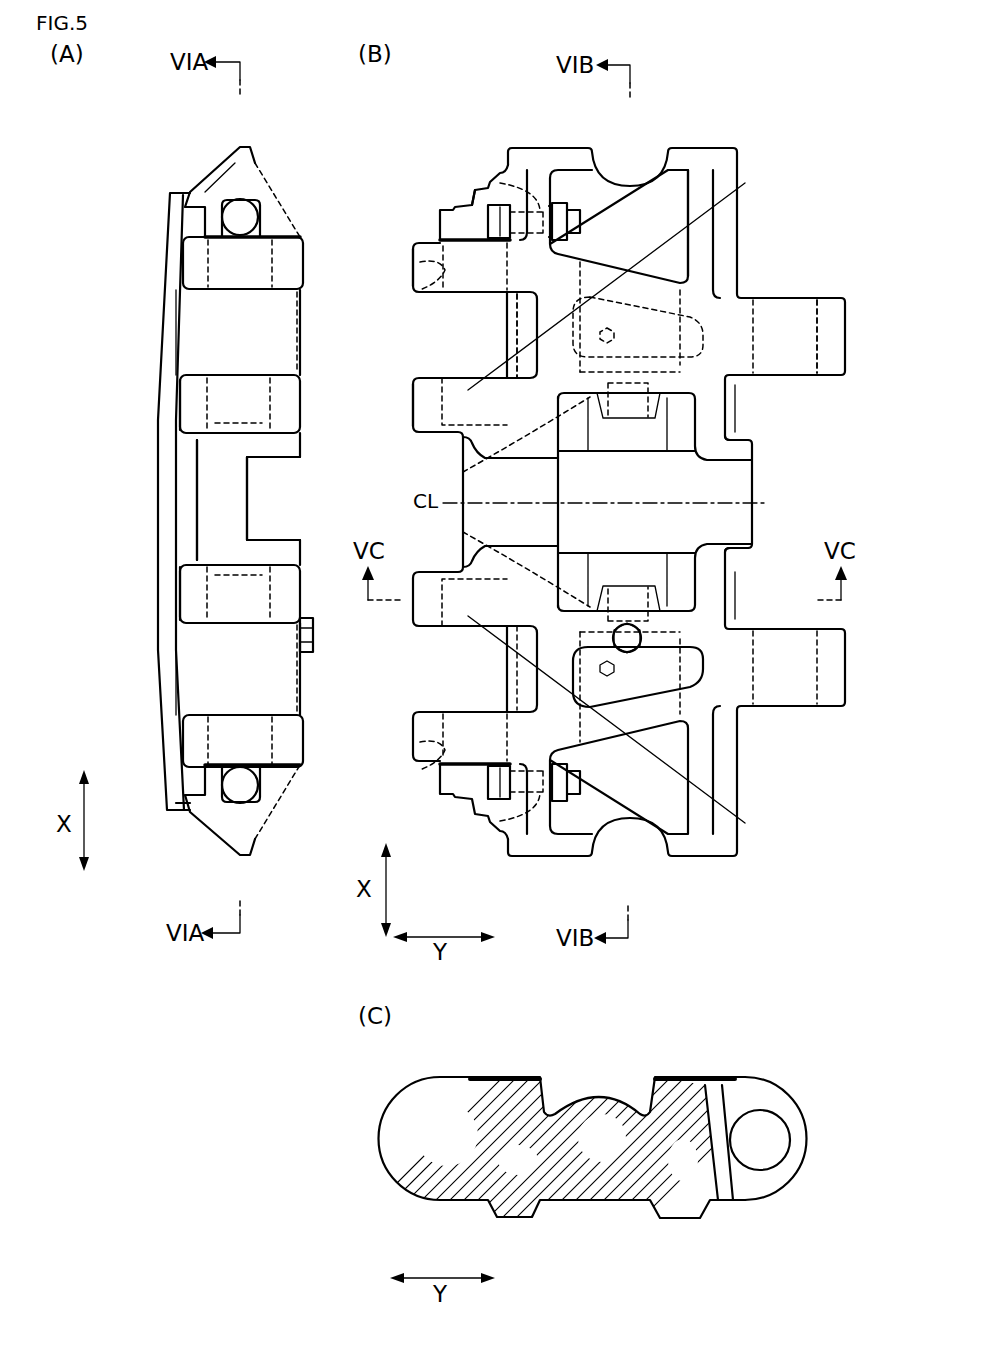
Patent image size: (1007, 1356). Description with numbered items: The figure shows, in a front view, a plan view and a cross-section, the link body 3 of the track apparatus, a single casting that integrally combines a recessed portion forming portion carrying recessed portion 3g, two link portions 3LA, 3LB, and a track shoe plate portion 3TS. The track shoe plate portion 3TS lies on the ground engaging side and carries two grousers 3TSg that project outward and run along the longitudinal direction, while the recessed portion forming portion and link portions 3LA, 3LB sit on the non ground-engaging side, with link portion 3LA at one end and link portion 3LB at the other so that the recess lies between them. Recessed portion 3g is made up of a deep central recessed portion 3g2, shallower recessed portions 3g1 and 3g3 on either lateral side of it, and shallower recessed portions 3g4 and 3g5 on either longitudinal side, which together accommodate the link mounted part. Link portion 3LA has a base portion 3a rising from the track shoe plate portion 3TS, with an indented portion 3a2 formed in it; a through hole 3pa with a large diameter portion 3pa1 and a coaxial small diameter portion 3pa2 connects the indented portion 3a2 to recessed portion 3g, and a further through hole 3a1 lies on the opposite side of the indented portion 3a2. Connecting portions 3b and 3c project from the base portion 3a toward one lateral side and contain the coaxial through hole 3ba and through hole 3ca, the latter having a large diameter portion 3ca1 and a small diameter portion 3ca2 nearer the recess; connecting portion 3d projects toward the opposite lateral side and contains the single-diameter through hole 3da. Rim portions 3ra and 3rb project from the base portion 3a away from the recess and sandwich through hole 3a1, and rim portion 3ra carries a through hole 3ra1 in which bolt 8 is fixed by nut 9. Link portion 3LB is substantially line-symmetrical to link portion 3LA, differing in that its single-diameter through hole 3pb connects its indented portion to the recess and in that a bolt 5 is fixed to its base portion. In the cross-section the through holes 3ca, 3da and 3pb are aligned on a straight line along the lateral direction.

The link body 3 is at (146, 175).
The bolt 5 is at (314, 632).
The bolt 8 is at (240, 217).
The nut 9 is at (605, 190).
The link portion 3LA is at (110, 268).
The link portion 3LB is at (110, 745).
The rim portion 3ra is at (260, 205).
The through hole 3ra1 is at (520, 186).
The rim portion 3rb is at (688, 317).
The base portion 3a is at (240, 321).
The through hole 3a1 is at (497, 305).
The indented portion 3a2 is at (700, 333).
The connecting portion 3b is at (225, 265).
The through hole 3ba is at (272, 262).
The connecting portion 3c is at (225, 398).
The through hole 3ca is at (92, 404).
The large diameter portion 3ca1 is at (195, 408).
The small diameter portion 3ca2 is at (195, 437).
The connecting portion 3d is at (300, 352).
The through hole 3da is at (803, 323).
The recessed portion 3g is at (252, 498).
The recessed portion 3g1 is at (600, 487).
The recessed portion 3g2 is at (632, 510).
The recessed portion 3g3 is at (727, 532).
The recessed portion 3g4 is at (670, 570).
The recessed portion 3g5 is at (670, 433).
The through hole 3pa is at (397, 450).
The large diameter portion 3pa1 is at (466, 472).
The small diameter portion 3pa2 is at (468, 447).
The through hole 3pb is at (466, 536).
The track shoe plate portion 3TS is at (185, 503).
The grouser 3TSg is at (176, 812).